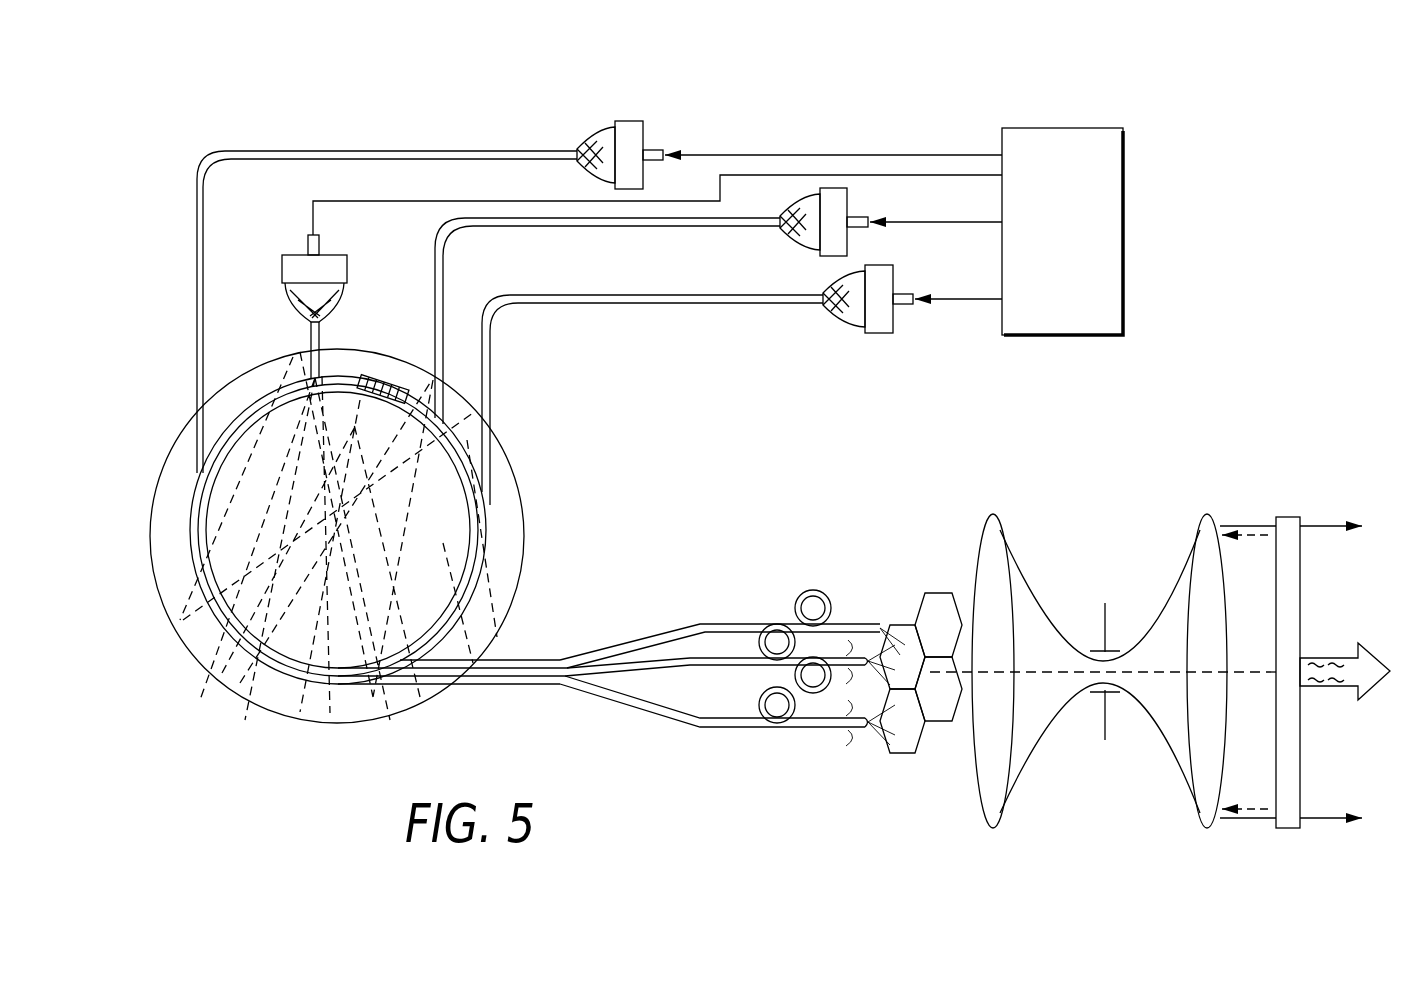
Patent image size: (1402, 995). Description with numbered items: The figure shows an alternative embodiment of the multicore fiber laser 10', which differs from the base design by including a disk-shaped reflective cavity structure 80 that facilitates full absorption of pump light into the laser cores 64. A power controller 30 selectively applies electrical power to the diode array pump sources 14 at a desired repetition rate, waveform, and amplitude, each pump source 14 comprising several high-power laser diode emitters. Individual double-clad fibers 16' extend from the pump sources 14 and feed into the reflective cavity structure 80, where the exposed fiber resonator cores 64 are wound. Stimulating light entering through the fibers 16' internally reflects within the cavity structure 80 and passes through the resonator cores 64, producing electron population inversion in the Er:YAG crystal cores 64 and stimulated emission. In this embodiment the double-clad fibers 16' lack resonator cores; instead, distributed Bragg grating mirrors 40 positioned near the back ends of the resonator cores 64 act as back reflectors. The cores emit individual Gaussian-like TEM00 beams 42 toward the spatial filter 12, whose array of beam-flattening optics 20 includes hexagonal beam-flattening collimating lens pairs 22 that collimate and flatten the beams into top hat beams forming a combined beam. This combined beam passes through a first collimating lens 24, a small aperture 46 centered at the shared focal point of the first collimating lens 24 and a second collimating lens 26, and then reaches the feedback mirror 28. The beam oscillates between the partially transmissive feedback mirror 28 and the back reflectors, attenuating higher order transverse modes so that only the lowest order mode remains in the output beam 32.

The multicore fiber laser 10' is at (829, 78).
The spatial filter 12 is at (1105, 505).
The diode array pump source 14 is at (583, 130).
The double-clad fiber 16' is at (472, 328).
The array of beam-flattening optics 20 is at (912, 583).
The hexagonal beam-flattening collimating lens pair 22 is at (938, 593).
The first collimating lens 24 is at (993, 515).
The second collimating lens 26 is at (1207, 515).
The feedback mirror 28 is at (1288, 517).
The power controller 30 is at (1058, 127).
The beam 32 is at (1330, 658).
The distributed Bragg grating mirror 40 is at (369, 401).
The Gaussian-like TEM00 beam 42 is at (900, 622).
The aperture 46 is at (1100, 676).
The resonator core 64 is at (228, 440).
The disk-shaped reflective cavity structure 80 is at (520, 478).